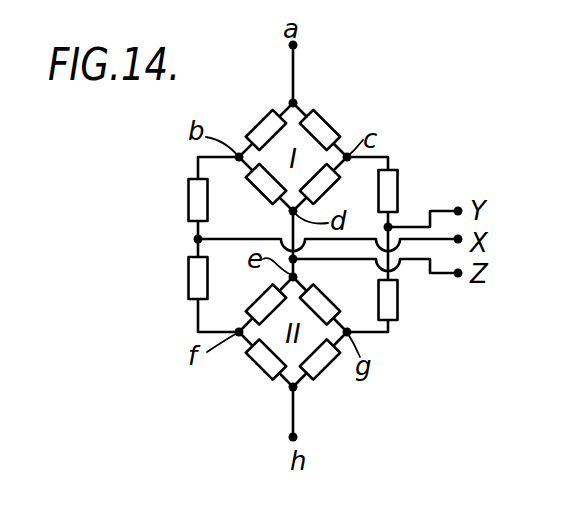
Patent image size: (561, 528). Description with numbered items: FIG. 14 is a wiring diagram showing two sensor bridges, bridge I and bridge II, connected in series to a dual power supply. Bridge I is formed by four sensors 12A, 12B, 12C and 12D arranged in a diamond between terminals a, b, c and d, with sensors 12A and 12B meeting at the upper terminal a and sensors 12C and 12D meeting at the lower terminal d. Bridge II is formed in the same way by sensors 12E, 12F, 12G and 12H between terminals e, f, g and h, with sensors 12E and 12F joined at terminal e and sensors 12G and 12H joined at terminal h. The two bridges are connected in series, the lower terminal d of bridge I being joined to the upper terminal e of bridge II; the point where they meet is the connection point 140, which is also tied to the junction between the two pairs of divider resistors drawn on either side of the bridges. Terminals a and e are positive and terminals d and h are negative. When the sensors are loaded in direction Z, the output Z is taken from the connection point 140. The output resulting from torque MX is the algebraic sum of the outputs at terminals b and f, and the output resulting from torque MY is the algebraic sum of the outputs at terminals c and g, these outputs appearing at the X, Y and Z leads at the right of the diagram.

The sensor 12A is at (262, 126).
The sensor 12B is at (326, 126).
The sensor 12C is at (258, 187).
The sensor 12D is at (334, 188).
The sensor 12E is at (257, 309).
The sensor 12F is at (326, 306).
The sensor 12G is at (258, 368).
The sensor 12H is at (322, 372).
The connection point 140 is at (198, 239).